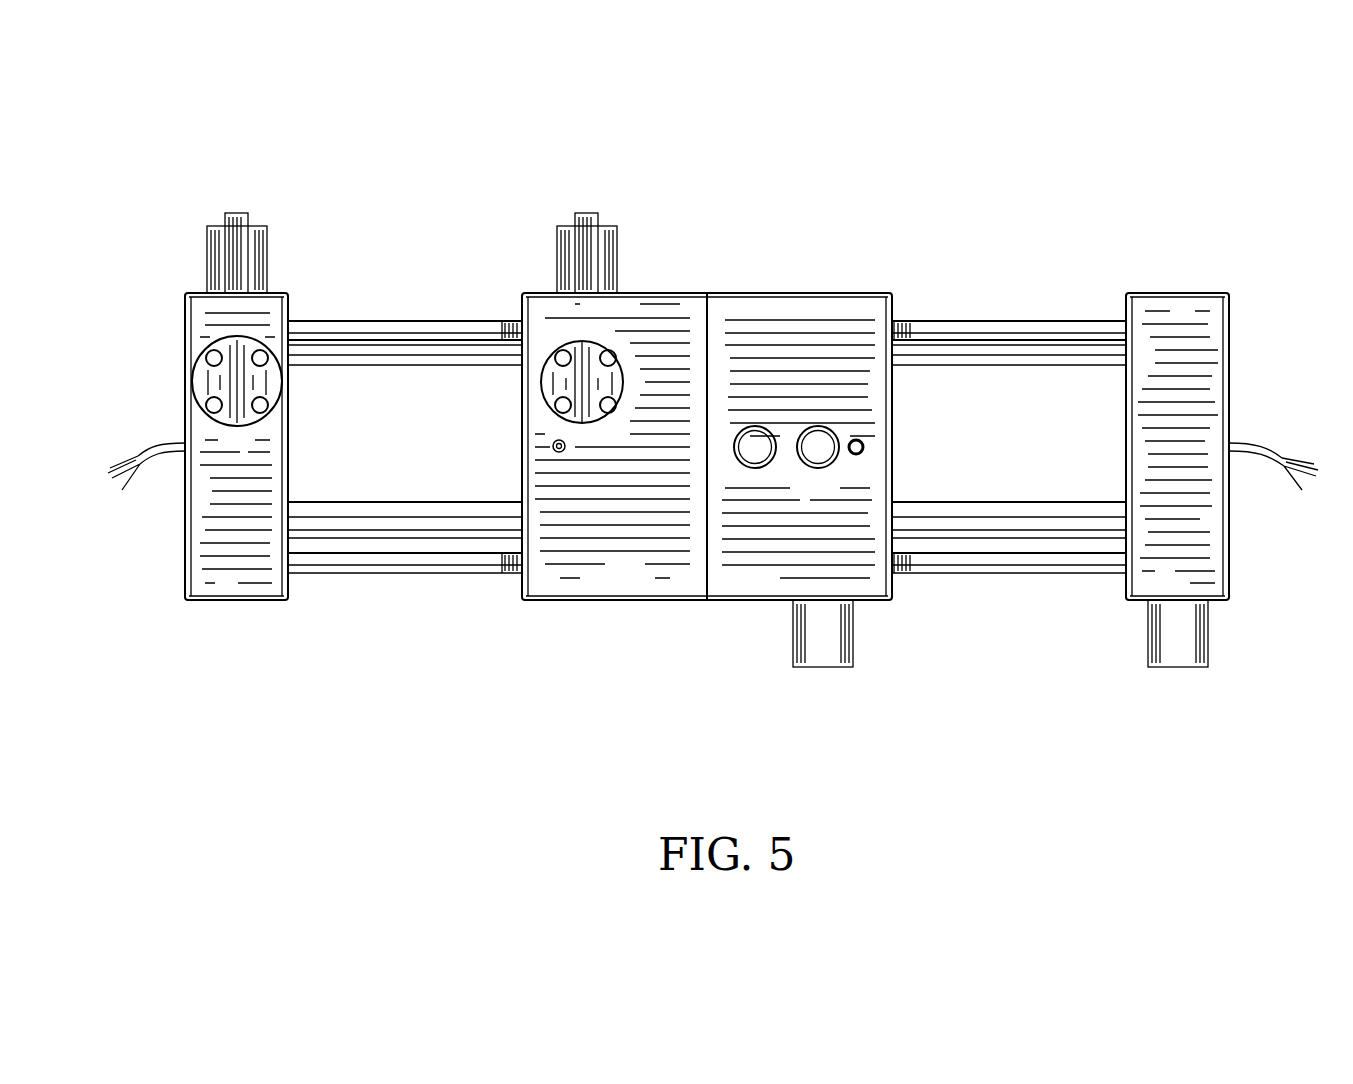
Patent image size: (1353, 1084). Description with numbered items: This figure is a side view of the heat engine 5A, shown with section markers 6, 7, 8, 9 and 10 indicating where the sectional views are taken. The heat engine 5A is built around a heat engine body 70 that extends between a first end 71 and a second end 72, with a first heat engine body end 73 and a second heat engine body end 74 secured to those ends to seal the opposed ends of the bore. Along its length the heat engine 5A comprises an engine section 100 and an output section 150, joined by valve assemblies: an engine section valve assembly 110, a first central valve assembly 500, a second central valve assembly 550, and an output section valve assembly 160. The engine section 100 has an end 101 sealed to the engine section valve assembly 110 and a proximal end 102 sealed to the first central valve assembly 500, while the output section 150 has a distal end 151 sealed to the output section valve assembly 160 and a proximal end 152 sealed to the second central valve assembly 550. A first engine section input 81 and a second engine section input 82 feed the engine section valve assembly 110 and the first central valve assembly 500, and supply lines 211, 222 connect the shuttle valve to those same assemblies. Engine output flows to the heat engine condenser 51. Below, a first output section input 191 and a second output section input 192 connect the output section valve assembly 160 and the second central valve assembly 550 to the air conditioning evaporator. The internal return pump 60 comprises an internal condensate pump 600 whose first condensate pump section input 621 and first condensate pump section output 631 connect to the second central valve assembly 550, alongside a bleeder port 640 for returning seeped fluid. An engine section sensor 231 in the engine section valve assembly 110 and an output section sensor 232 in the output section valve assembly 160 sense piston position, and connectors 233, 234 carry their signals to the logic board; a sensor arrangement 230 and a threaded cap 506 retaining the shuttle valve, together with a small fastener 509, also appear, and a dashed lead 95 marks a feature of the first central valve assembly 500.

The heat engine 5A is at (464, 201).
The section line 6 is at (150, 447).
The section line 7 is at (236, 213).
The section line 8 is at (587, 213).
The section line 9 is at (818, 292).
The section line 10 is at (1177, 292).
The heat engine condenser 51 is at (988, 400).
The internal return pump 60 is at (780, 498).
The heat engine body 70 is at (382, 348).
The first end 71 is at (291, 340).
The second end 72 is at (522, 350).
The first heat engine body end 73 is at (278, 303).
The second heat engine body end 74 is at (540, 303).
The first engine section input 81 is at (268, 238).
The second engine section input 82 is at (614, 238).
The divider 95 is at (699, 400).
The engine section 100 is at (392, 538).
The end 101 is at (300, 543).
The proximal end 102 is at (503, 532).
The engine section valve assembly 110 is at (200, 590).
The output section 150 is at (990, 545).
The distal end 151 is at (1120, 548).
The proximal end 152 is at (900, 542).
The output section valve assembly 160 is at (1225, 590).
The first output section input 191 is at (1195, 656).
The second output section input 192 is at (840, 637).
The supply line 211 is at (240, 268).
The supply line 222 is at (592, 228).
The cable assembly 230 is at (136, 532).
The engine section sensor 231 is at (230, 503).
The output section sensor 232 is at (1192, 478).
The connector 233 is at (132, 460).
The connector 234 is at (1278, 462).
The first central valve assembly 500 is at (633, 592).
The threaded cap 506 is at (593, 387).
The screw 509 is at (553, 446).
The second central valve assembly 550 is at (735, 588).
The internal condensate pump 600 is at (860, 315).
The first condensate pump section input 621 is at (755, 447).
The first condensate pump section output 631 is at (818, 447).
The bleeder port 640 is at (856, 447).